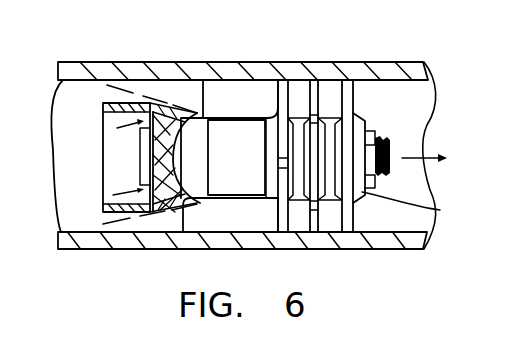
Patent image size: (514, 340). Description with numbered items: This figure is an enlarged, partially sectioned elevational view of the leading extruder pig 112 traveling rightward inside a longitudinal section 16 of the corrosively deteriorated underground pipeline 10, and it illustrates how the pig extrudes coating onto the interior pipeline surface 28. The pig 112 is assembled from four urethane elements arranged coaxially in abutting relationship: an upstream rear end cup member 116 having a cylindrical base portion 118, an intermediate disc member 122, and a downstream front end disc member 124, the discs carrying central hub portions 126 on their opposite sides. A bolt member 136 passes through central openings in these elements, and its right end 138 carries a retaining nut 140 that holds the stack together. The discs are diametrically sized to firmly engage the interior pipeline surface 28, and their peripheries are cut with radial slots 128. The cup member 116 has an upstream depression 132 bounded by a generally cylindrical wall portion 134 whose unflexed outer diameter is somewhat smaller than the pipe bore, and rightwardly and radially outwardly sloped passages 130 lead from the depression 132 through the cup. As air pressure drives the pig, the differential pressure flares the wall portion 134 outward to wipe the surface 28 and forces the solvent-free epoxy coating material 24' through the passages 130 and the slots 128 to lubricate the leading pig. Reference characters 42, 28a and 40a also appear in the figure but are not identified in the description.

The pipeline 10 is at (116, 55).
The longitudinal section of the pipeline 16 is at (417, 65).
The epoxy coating material 24' is at (145, 157).
The interior pipeline surface 28 is at (82, 84).
The passage 42 is at (11, 85).
The piston portion 28a is at (16, 107).
The chamber portion 40a is at (16, 128).
The leading extruder pig 112 is at (357, 216).
The rear end cup member 116 is at (197, 108).
The cylindrical base portion 118 is at (256, 153).
The intermediate disc member 122 is at (282, 90).
The front end disc member 124 is at (313, 90).
The central hub portions 126 is at (348, 90).
The radial slots 128 is at (323, 96).
The sloped passages 130 is at (182, 107).
The cup member depression 132 is at (114, 179).
The cylindrical wall portion 134 is at (118, 245).
The bolt member 136 is at (163, 215).
The right end of the bolt 138 is at (390, 146).
The retaining nut 140 is at (423, 208).